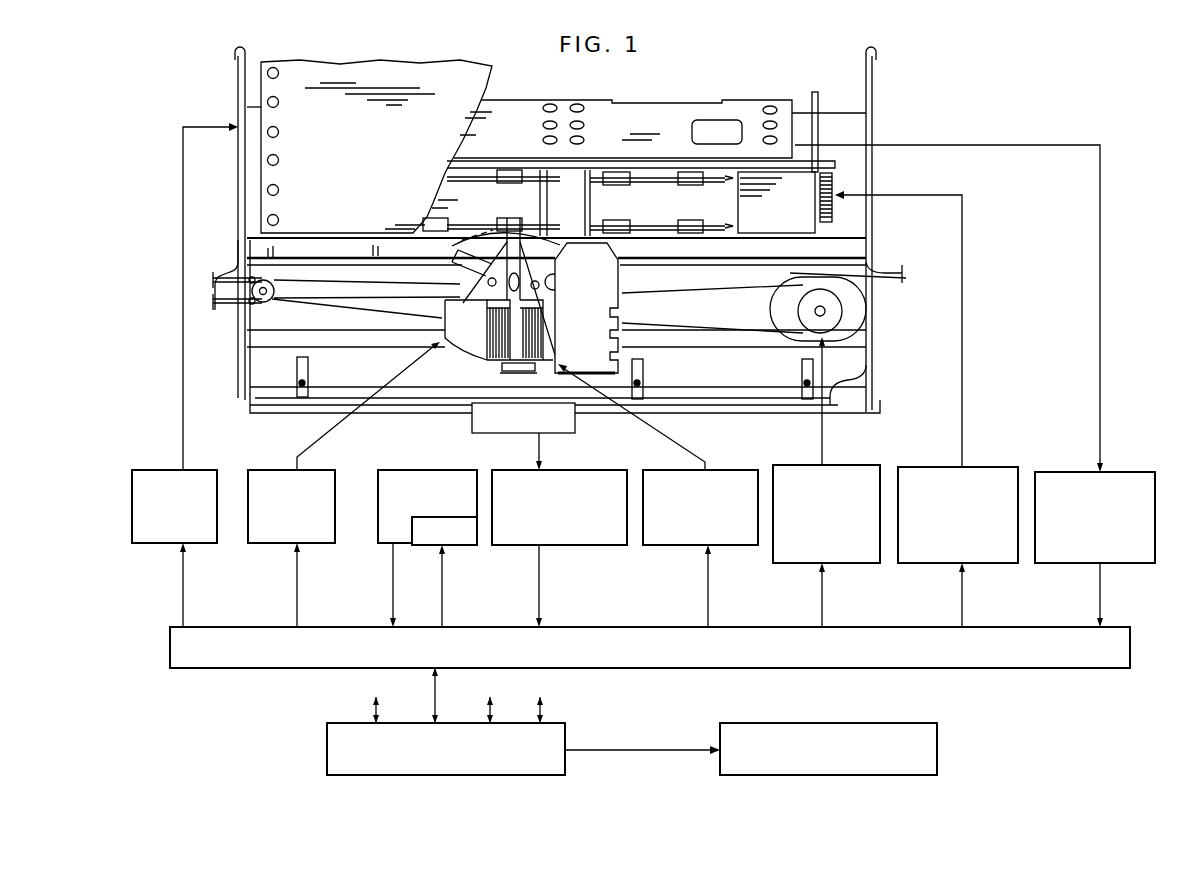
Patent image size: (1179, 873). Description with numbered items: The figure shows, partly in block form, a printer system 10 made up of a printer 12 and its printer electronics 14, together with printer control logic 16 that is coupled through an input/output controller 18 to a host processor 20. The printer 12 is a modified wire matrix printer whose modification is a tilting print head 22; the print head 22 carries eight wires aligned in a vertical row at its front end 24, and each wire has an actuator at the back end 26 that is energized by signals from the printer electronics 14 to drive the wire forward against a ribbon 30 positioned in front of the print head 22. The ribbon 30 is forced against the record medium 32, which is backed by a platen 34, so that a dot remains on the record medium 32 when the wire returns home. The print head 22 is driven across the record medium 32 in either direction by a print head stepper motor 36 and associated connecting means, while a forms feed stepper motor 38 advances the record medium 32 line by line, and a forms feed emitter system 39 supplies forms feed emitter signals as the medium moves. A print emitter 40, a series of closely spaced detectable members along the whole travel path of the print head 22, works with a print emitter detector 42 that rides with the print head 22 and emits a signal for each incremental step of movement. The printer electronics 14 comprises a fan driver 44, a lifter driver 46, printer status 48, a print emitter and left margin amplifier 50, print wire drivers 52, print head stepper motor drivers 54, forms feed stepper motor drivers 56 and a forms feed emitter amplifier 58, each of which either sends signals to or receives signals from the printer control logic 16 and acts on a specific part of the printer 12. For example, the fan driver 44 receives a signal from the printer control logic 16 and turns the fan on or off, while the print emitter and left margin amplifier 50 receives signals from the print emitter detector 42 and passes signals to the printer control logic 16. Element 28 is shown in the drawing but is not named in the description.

The printer system 10 is at (1006, 63).
The printer 12 is at (641, 102).
The printer electronics 14 is at (1150, 447).
The printer control logic 16 is at (1022, 662).
The input/output (I/O) controller 18 is at (327, 754).
The host processor 20 is at (727, 764).
The print head 22 is at (436, 319).
The front end 24 is at (512, 222).
The back end 26 is at (517, 372).
The printhead 28 is at (608, 293).
The ribbon 30 is at (575, 226).
The record medium 32 is at (429, 66).
The platen 34 is at (644, 206).
The print head stepper motor 36 is at (855, 310).
The forms feed stepper motor 38 is at (805, 222).
The forms feed emitter system 39 is at (796, 100).
The print emitter 40 is at (402, 401).
The print emitter detector 42 is at (580, 433).
The fan driver 44 is at (193, 470).
The lifter driver 46 is at (272, 470).
The printer status 48 is at (388, 538).
The print emitter and left margin amplifier 50 is at (520, 470).
The print wire drivers 52 is at (727, 470).
The print head stepper motor drivers 54 is at (855, 466).
The forms feed stepper motor drivers 56 is at (945, 467).
The forms feed emitter amplifier 58 is at (1065, 472).